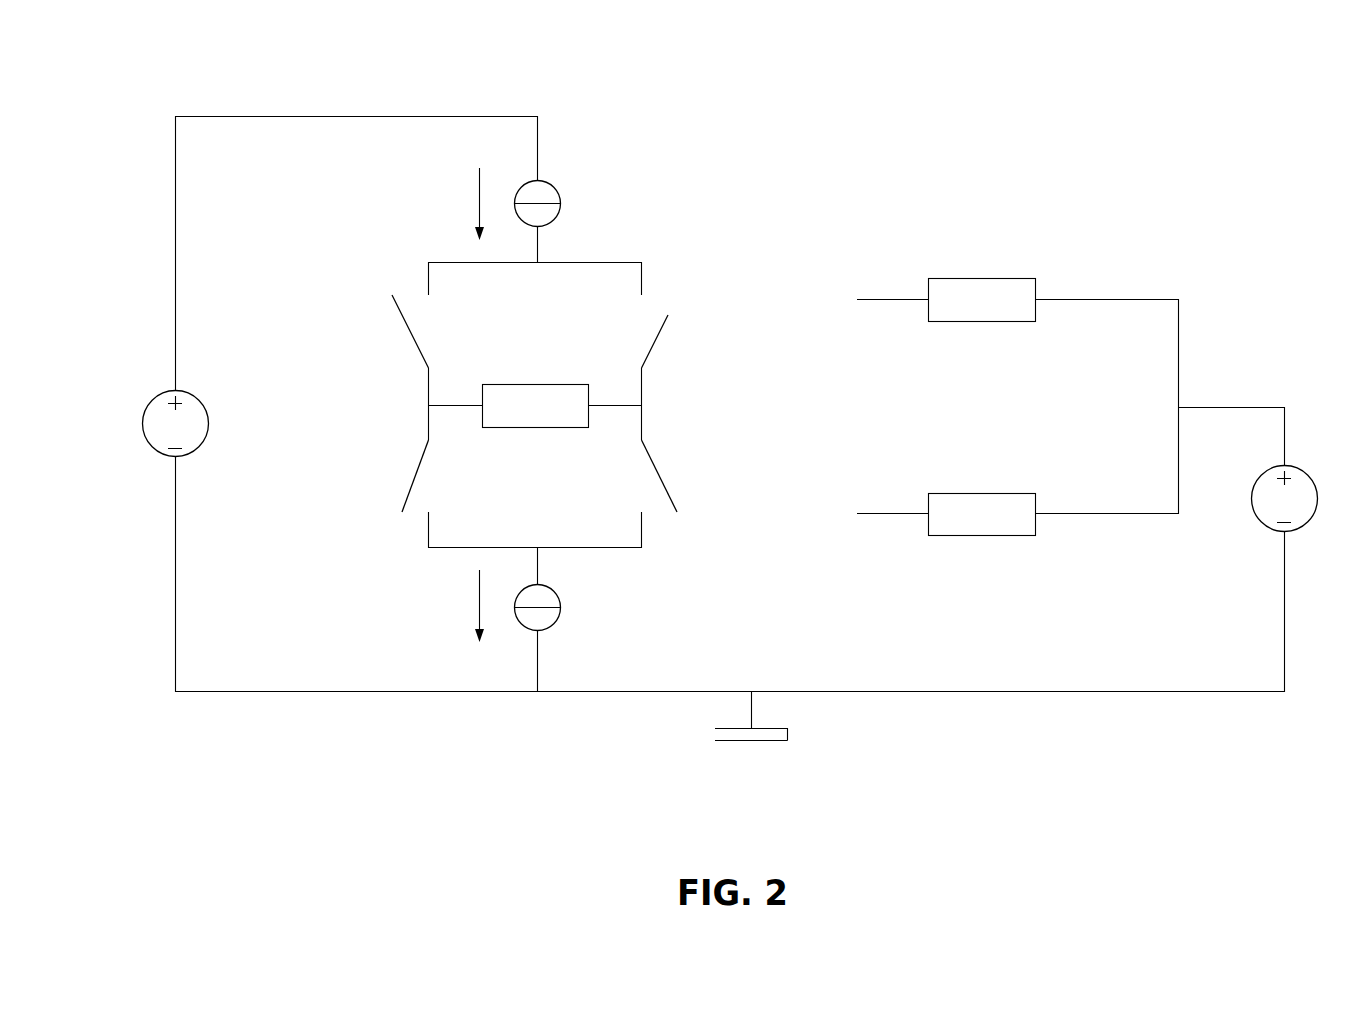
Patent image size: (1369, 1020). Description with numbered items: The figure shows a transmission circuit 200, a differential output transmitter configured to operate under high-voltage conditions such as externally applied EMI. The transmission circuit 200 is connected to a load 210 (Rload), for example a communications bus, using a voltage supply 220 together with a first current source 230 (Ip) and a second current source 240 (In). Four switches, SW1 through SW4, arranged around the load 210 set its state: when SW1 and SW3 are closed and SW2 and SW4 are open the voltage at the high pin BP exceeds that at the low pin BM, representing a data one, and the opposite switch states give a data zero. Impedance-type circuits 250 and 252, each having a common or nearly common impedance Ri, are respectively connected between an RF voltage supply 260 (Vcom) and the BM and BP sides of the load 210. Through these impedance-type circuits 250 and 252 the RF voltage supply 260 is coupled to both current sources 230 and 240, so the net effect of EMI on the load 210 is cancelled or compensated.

The transmission circuit 200 is at (1180, 80).
The load 210 is at (570, 384).
The voltage supply 220 is at (193, 394).
The current source 230 is at (554, 187).
The current source 240 is at (547, 584).
The impedance-type circuit 250 is at (1003, 278).
The impedance-type circuit 252 is at (1002, 493).
The RF voltage supply 260 is at (1272, 466).